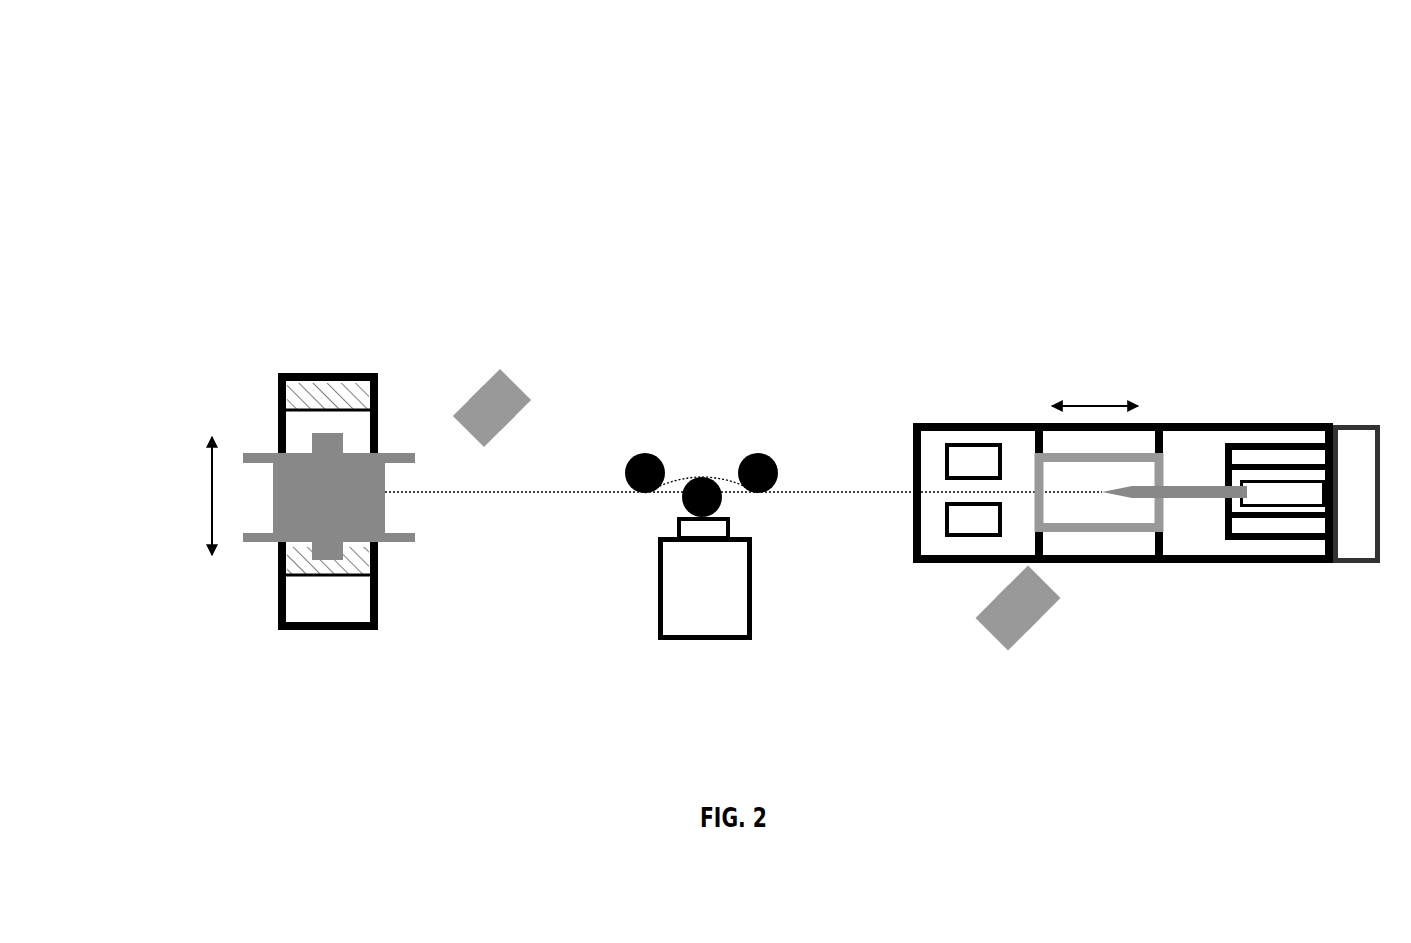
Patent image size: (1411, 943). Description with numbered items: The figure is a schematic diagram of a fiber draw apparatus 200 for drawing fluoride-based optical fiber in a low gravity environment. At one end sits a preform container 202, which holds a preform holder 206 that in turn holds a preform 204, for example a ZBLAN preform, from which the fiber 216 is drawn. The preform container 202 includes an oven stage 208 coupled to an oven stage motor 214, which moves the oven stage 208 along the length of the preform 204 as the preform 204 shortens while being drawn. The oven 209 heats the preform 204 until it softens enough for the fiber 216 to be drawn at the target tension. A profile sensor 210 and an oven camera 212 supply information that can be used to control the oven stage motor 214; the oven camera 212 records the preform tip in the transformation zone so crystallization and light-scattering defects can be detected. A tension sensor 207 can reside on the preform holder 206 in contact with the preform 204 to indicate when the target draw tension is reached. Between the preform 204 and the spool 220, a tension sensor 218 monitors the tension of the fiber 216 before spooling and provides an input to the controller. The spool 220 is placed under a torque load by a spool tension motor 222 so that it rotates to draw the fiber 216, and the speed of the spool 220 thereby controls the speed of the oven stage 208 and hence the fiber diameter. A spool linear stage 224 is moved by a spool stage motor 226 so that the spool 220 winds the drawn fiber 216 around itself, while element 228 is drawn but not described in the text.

The fiber draw apparatus 200 is at (268, 72).
The preform container 202 is at (913, 403).
The preform 204 is at (1175, 482).
The preform holder 206 is at (1260, 472).
The tension sensor 207 is at (1283, 507).
The oven stage 208 is at (1095, 379).
The oven 209 is at (1143, 532).
The profile sensor 210 is at (968, 455).
The oven camera 212 is at (997, 623).
The oven stage motor 214 is at (1357, 563).
The fiber 216 is at (592, 492).
The tension sensor 218 is at (701, 545).
The spool 220 is at (402, 542).
The spool tension motor 222 is at (338, 580).
The spool linear stage 224 is at (176, 496).
The spool stage motor 226 is at (345, 372).
The fiber clamp 228 is at (510, 397).